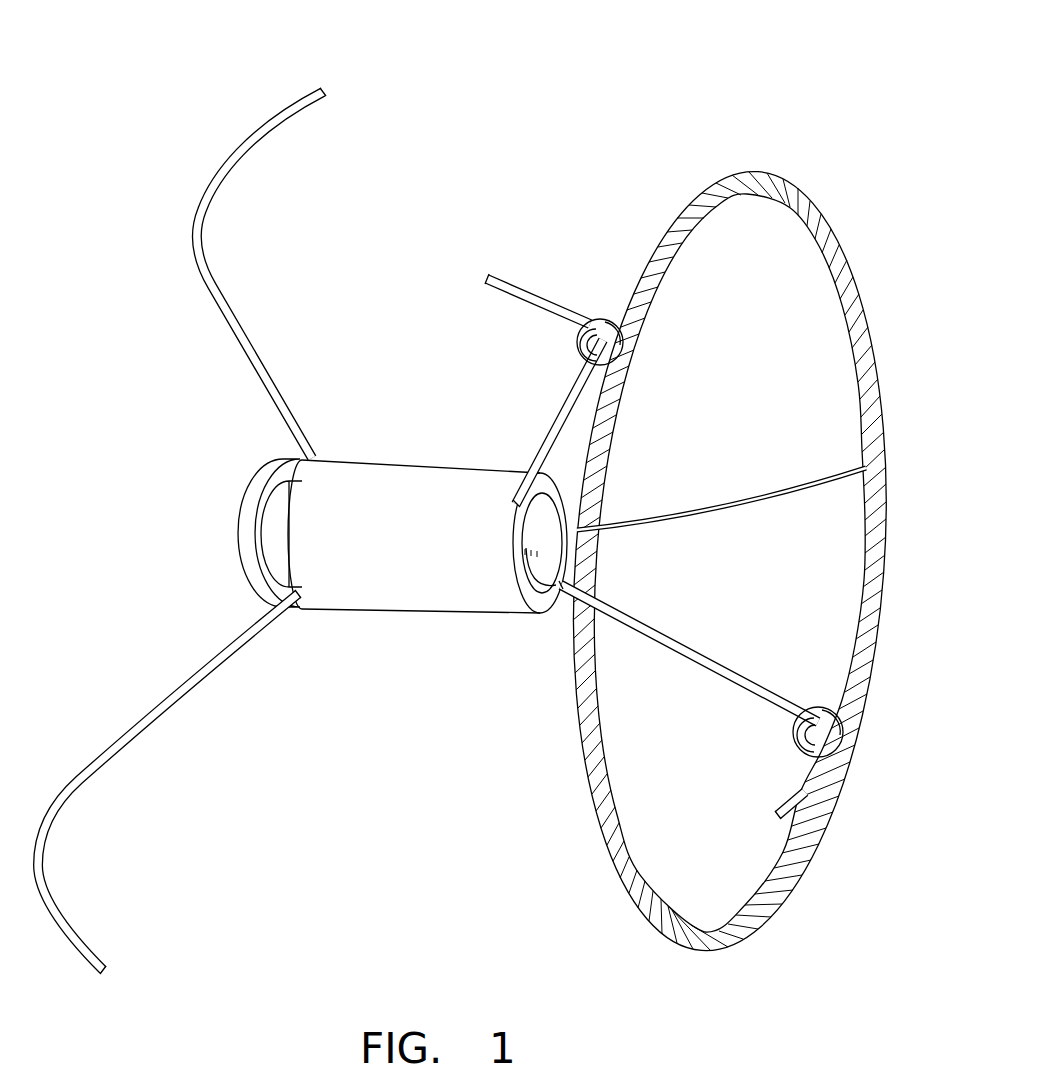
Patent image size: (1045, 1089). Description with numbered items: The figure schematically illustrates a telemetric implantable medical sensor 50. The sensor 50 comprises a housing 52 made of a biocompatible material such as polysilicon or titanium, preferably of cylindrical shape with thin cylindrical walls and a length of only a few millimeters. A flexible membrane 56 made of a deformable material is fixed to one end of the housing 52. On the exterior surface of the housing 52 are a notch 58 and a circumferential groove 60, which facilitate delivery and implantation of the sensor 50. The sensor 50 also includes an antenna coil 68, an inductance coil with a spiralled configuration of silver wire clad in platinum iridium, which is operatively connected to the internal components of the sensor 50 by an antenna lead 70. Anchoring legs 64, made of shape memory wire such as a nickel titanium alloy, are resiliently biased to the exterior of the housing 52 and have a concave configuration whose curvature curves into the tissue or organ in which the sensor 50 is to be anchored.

The sensor 50 is at (703, 66).
The housing 52 is at (385, 487).
The flexible membrane 56 is at (553, 598).
The notch 58 is at (288, 502).
The circumferential groove 60 is at (265, 535).
The anchoring legs 64 is at (212, 182).
The antenna coil 68 is at (843, 286).
The antenna lead 70 is at (750, 497).